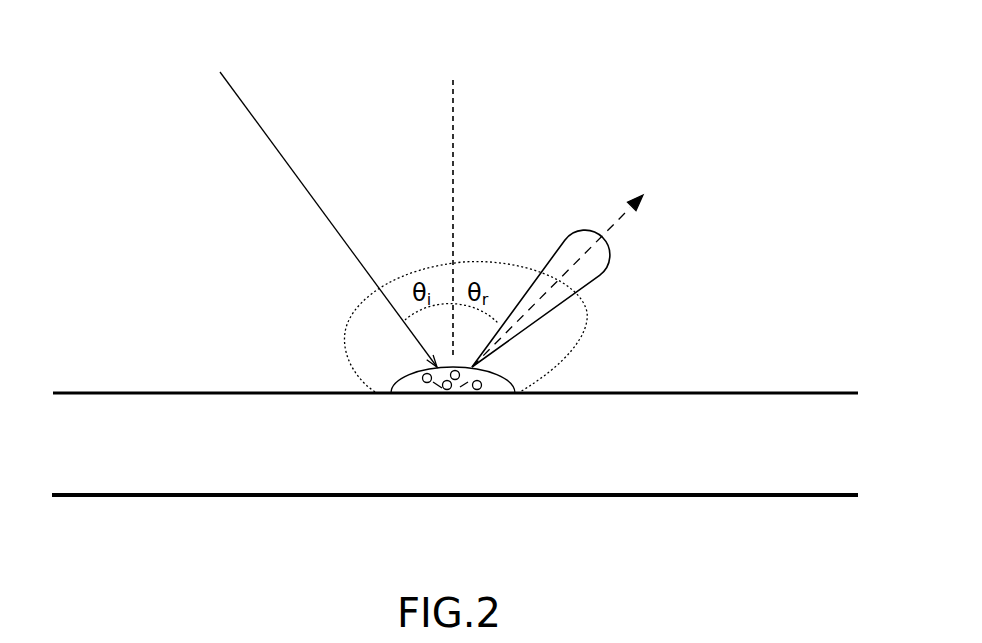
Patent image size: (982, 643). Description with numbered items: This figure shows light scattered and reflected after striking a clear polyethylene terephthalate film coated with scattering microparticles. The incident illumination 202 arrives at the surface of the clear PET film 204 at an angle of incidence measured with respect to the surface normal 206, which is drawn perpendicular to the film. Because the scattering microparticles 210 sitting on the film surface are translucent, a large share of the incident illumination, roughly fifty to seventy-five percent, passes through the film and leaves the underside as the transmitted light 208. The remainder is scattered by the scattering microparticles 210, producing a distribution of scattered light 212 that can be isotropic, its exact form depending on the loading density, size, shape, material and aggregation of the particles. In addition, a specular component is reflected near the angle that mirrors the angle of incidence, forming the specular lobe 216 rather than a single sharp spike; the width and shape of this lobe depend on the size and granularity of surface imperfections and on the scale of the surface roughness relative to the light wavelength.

The incident illumination 202 is at (275, 197).
The clear PET film 204 is at (318, 462).
The surface normal 206 is at (523, 117).
The transmitted light 208 is at (555, 557).
The scattering microparticles 210 is at (515, 377).
The scattered light 212 is at (492, 260).
The specular lobe 216 is at (612, 263).